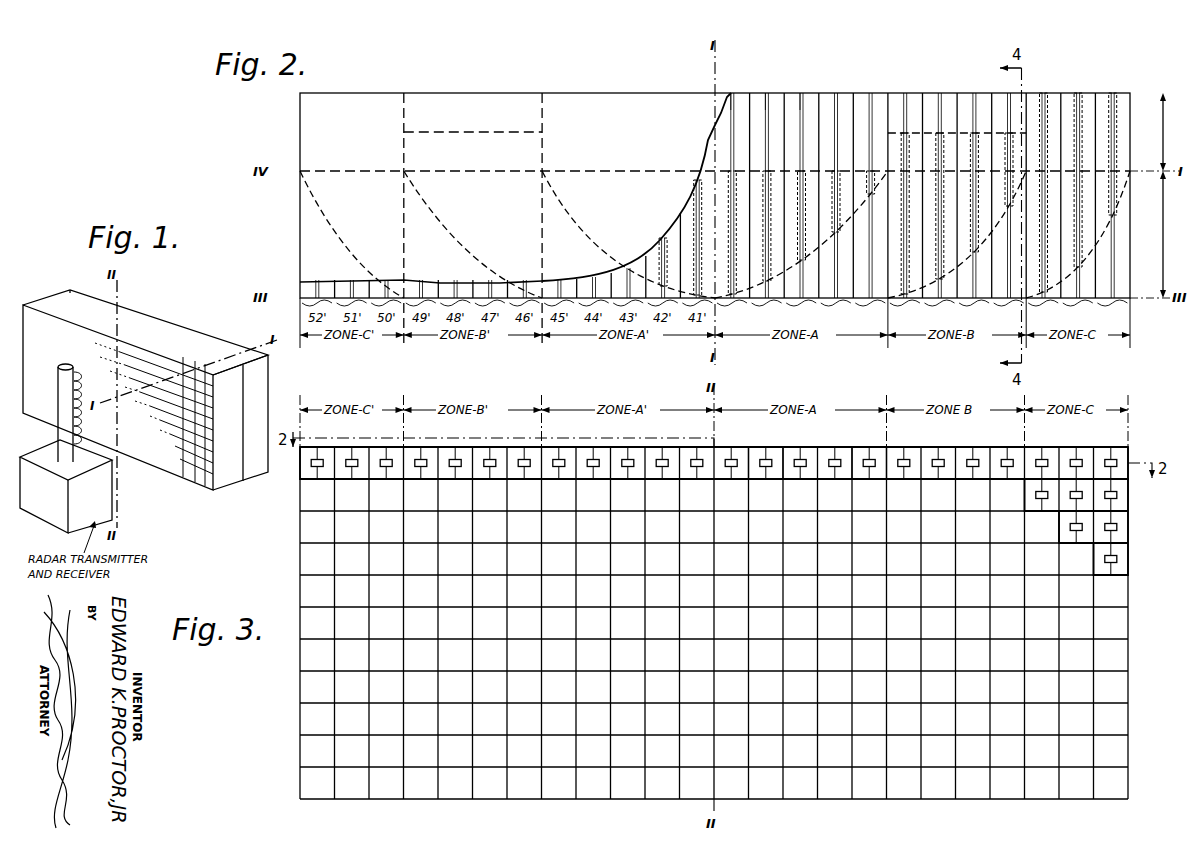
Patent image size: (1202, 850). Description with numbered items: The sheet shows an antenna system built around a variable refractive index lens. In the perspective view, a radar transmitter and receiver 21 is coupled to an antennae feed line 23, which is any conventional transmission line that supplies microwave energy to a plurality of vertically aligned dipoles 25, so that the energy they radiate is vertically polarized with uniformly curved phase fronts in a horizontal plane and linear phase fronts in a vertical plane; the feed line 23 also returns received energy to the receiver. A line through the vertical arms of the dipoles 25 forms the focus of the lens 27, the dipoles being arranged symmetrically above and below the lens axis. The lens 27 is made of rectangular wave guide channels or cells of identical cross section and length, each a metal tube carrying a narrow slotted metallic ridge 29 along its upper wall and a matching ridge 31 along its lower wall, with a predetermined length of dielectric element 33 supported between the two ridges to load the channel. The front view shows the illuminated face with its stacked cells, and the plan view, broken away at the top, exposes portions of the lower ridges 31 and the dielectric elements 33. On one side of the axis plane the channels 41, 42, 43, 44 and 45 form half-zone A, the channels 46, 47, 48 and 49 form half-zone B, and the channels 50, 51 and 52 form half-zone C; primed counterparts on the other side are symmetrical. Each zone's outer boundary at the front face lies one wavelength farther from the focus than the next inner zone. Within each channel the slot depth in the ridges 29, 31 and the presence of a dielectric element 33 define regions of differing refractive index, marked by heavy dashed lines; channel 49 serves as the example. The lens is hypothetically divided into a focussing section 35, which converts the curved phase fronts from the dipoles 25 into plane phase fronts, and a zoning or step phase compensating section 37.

In FIG. 1, the radar transmitter and receiver 21 is at (100, 499).
In FIG. 1, the antennae feed line 23 is at (57, 435).
In FIG. 1, the dipoles 25 is at (81, 406).
In FIG. 1, the lens 27 is at (60, 292).
In FIG. 2, the lens 27 is at (508, 93).
In FIG. 3, the lens 27 is at (714, 623).
In FIG. 3, the metallic ridge 29 is at (800, 460).
In FIG. 2, the metallic ridge 31 is at (765, 101).
In FIG. 3, the metallic ridge 31 is at (936, 460).
In FIG. 2, the dielectric element 33 is at (868, 172).
In FIG. 3, the dielectric element 33 is at (764, 456).
In FIG. 1, the focussing section 35 is at (234, 480).
In FIG. 2, the focussing section 35 is at (297, 232).
In FIG. 1, the compensating section 37 is at (262, 471).
In FIG. 2, the compensating section 37 is at (297, 141).
In FIG. 2, the wave guide channel 41 is at (737, 209).
In FIG. 2, the wave guide channel 42 is at (772, 209).
In FIG. 2, the wave guide channel 43 is at (806, 209).
In FIG. 2, the wave guide channel 44 is at (841, 209).
In FIG. 2, the wave guide channel 45 is at (875, 209).
In FIG. 2, the wave guide channel 46 is at (910, 209).
In FIG. 2, the wave guide channel 47 is at (944, 209).
In FIG. 2, the wave guide channel 48 is at (979, 209).
In FIG. 2, the wave guide channel 49 is at (1013, 209).
In FIG. 2, the wave guide channel 50 is at (1048, 209).
In FIG. 2, the wave guide channel 51 is at (1083, 209).
In FIG. 2, the wave guide channel 52 is at (1112, 209).